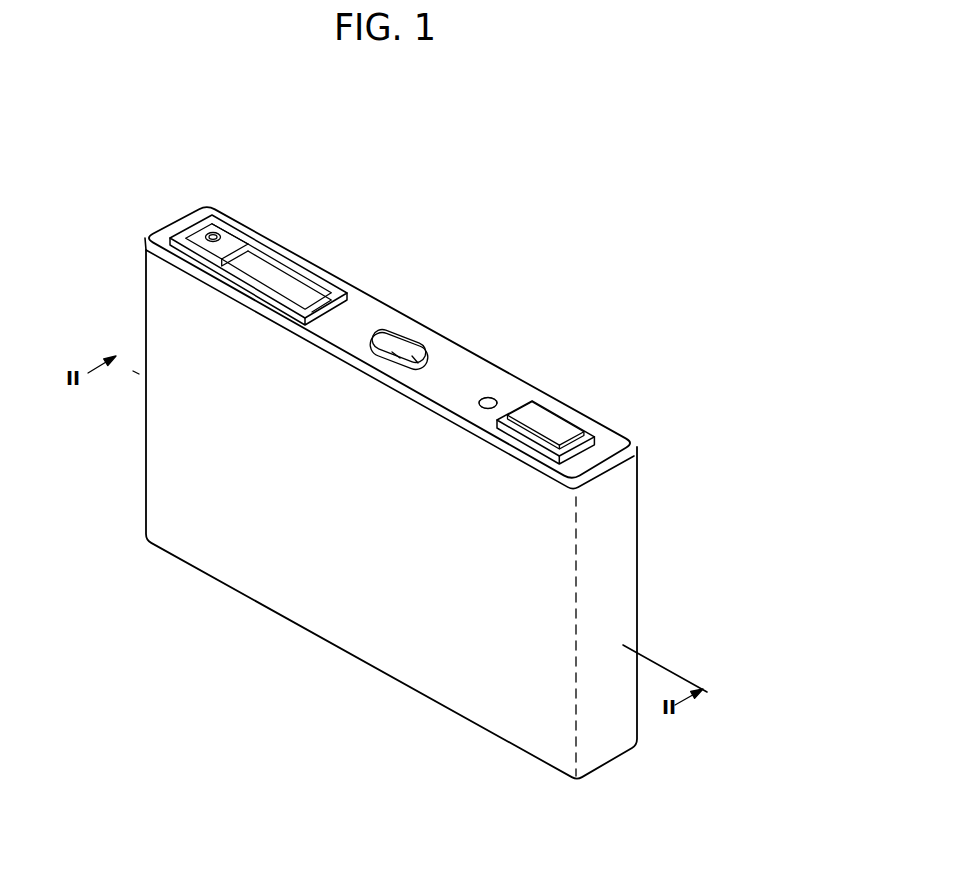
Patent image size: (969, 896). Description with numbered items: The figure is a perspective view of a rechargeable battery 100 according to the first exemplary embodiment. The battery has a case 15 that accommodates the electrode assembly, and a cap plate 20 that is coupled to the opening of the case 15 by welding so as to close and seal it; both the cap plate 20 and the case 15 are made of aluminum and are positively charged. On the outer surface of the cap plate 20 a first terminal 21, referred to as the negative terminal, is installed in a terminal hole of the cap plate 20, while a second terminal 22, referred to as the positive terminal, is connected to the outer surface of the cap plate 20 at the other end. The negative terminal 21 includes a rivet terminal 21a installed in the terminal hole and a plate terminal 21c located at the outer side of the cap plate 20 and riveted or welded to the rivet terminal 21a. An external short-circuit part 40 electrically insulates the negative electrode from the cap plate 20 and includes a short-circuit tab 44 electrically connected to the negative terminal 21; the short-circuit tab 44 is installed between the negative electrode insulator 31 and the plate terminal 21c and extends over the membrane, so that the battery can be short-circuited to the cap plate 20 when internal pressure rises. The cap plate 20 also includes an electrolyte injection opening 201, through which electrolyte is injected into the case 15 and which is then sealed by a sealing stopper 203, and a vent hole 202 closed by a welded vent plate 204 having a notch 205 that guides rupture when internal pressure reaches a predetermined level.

The rechargeable battery 100 is at (491, 202).
The case 15 is at (334, 611).
The cap plate 20 is at (367, 318).
The first terminal 21 is at (219, 222).
The rivet terminal 21a is at (207, 232).
The plate terminal 21c is at (237, 237).
The second terminal 22 is at (560, 413).
The negative electrode insulator 31 is at (268, 248).
The external short-circuit part 40 is at (302, 250).
The short-circuit tab 44 is at (305, 295).
The electrolyte injection opening 201 is at (485, 415).
The vent hole 202 is at (391, 338).
The sealing stopper 203 is at (490, 397).
The vent plate 204 is at (406, 352).
The notch 205 is at (421, 363).